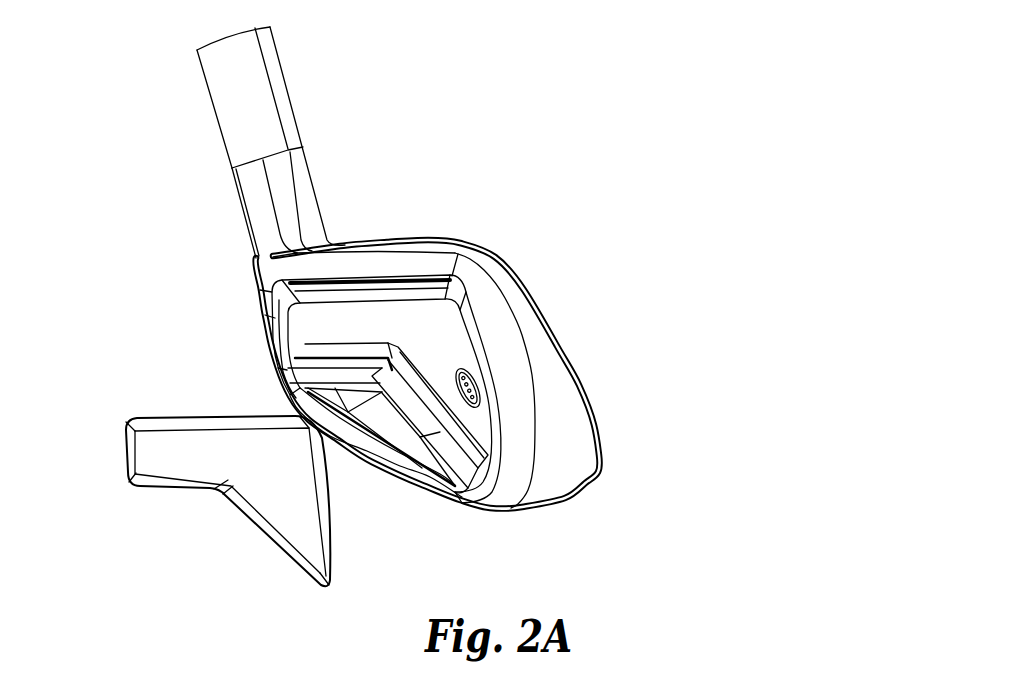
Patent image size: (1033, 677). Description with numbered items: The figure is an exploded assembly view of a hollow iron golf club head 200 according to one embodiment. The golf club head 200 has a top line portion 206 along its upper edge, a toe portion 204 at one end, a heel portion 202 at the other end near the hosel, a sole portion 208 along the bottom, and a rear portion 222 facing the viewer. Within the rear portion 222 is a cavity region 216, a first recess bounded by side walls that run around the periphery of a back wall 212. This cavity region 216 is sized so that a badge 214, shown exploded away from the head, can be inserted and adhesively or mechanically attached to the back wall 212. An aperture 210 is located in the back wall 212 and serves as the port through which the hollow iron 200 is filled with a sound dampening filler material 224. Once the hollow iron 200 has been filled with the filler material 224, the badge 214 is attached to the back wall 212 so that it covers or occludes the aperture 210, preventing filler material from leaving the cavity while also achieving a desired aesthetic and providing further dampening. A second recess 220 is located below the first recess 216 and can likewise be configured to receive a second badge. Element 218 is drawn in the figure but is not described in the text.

The hollow iron golf club head 200 is at (704, 70).
The heel portion 202 is at (255, 320).
The toe portion 204 is at (546, 375).
The top line portion 206 is at (400, 235).
The sole portion 208 is at (391, 481).
The aperture 210 is at (482, 393).
The back wall 212 is at (455, 312).
The badge 214 is at (160, 458).
The cavity region 216 is at (277, 330).
The support bar 218 is at (440, 436).
The second recess 220 is at (352, 443).
The rear portion 222 is at (154, 378).
The sound dampening filler material 224 is at (500, 483).